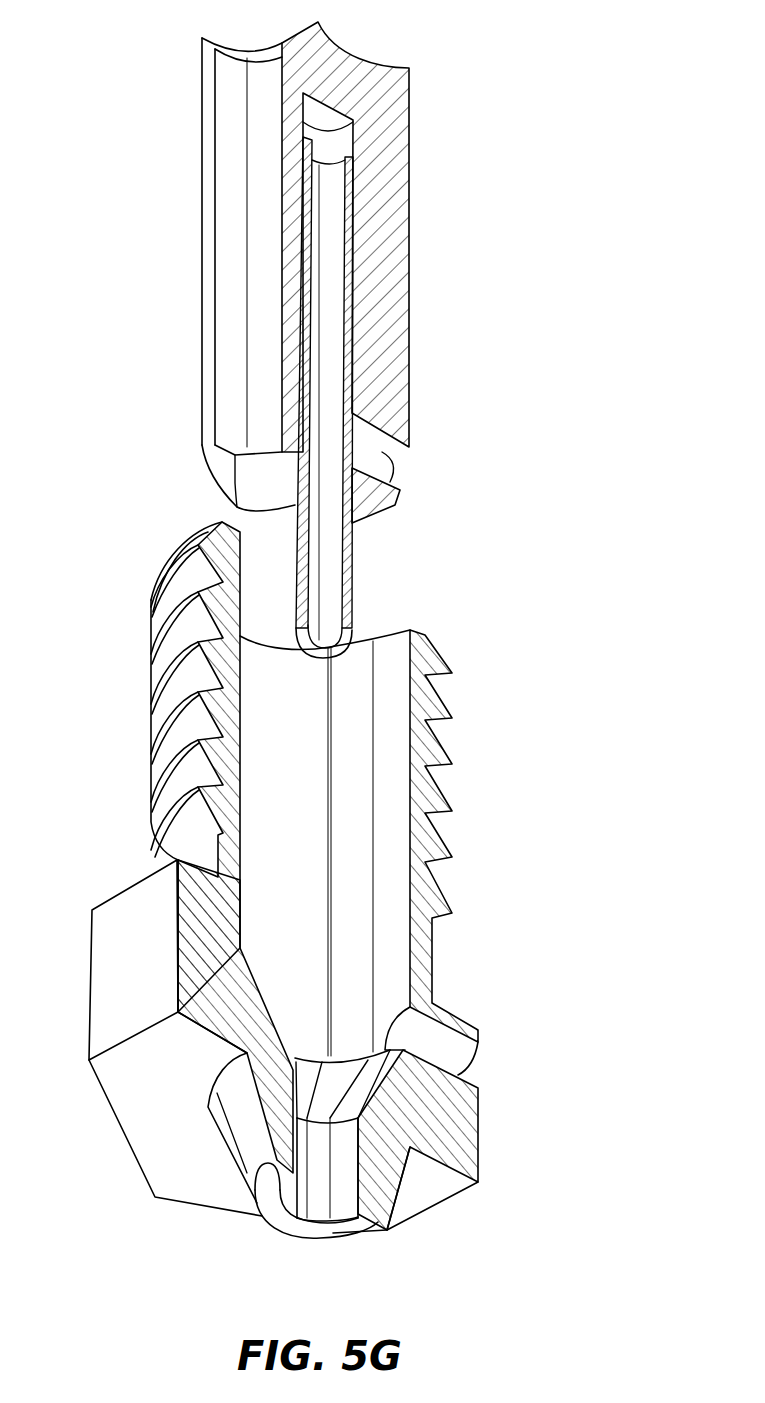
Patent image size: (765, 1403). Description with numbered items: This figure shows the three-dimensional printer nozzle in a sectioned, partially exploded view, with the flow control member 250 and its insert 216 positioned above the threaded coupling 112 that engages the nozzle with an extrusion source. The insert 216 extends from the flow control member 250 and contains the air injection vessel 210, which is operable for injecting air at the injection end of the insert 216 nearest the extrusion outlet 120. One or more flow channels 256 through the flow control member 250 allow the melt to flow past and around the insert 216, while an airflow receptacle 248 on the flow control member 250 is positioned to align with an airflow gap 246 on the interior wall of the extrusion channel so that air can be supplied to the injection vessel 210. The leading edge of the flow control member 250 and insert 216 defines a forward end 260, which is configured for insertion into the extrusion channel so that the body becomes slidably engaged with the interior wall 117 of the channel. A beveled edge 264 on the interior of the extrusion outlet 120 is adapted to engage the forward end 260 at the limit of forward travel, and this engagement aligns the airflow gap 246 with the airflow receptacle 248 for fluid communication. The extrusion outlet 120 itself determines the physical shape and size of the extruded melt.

The flow control member 250 is at (318, 23).
The flow channel 256 is at (233, 140).
The beveled edge 264 is at (203, 450).
The insert 216 is at (352, 563).
The airflow receptacle 248 is at (383, 450).
The forward end 260 is at (222, 498).
The coupling 112 is at (147, 663).
The air injection vessel 210 is at (302, 662).
The airflow gap 246 is at (448, 1053).
The interior wall 117 is at (348, 1178).
The extrusion outlet 120 is at (350, 1235).